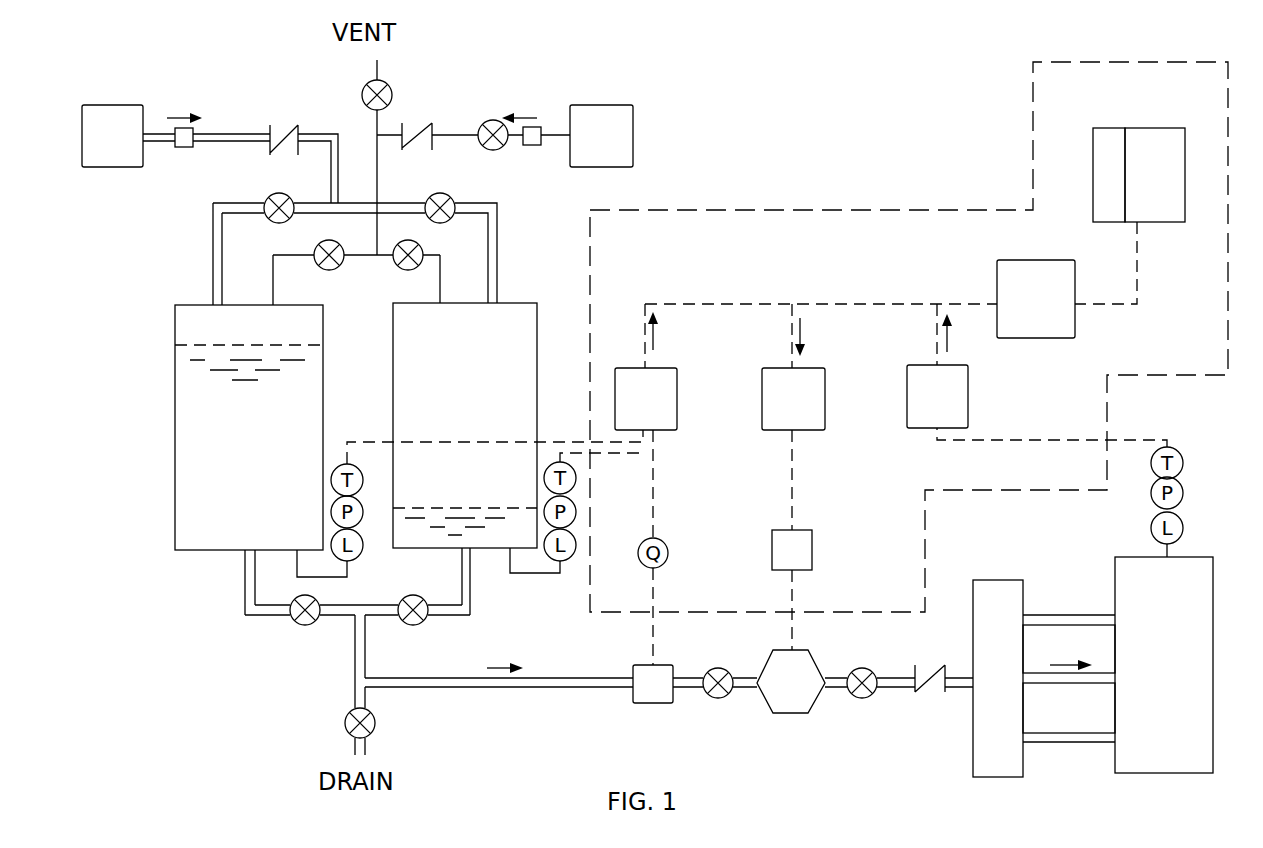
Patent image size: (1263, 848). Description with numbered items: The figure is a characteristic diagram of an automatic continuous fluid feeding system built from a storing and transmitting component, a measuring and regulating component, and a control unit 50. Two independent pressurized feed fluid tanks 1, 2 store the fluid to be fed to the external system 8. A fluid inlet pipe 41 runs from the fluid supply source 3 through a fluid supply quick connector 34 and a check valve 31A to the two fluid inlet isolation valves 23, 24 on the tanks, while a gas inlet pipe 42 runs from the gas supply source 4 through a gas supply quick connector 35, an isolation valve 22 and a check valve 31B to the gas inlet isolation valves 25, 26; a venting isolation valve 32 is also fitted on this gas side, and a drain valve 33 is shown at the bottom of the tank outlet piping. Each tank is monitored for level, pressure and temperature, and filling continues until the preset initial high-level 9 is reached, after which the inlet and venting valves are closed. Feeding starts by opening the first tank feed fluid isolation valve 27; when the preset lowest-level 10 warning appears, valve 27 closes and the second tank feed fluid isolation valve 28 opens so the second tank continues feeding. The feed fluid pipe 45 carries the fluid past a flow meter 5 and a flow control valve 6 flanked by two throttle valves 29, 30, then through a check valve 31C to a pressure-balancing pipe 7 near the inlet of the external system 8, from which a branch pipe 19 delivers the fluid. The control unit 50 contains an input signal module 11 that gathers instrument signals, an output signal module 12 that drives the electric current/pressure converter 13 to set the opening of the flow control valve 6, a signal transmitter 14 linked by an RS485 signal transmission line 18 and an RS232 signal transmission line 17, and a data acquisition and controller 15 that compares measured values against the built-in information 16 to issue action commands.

The first feed fluid tank 1 is at (255, 430).
The second feed fluid tank 2 is at (452, 430).
The fluid supply source 3 is at (104, 150).
The gas supply source 4 is at (593, 150).
The flow meter 5 is at (645, 698).
The flow control valve 6 is at (783, 696).
The pressure-balancing pipe 7 is at (989, 651).
The external system 8 is at (1154, 646).
The preset initial high-level 9 is at (228, 345).
The preset lowest-level 10 is at (438, 508).
The input signal module 11 is at (636, 413).
The output signal module 12 is at (781, 413).
The electric current/pressure converter 13 is at (781, 564).
The signal transmitter 14 is at (1024, 314).
The data acquisition and controller 15 is at (1141, 184).
The built-in information 16 is at (1098, 184).
The RS232 signal transmission line 17 is at (1136, 288).
The RS485 signal transmission line 18 is at (845, 302).
The branch pipe 19 is at (1055, 612).
The isolation valve 22 is at (497, 120).
The first fluid inlet isolation valve 23 is at (275, 195).
The second fluid inlet isolation valve 24 is at (452, 196).
The first gas inlet isolation valve 25 is at (314, 250).
The second gas inlet isolation valve 26 is at (420, 250).
The first tank feed fluid isolation valve 27 is at (292, 622).
The second tank feed fluid isolation valve 28 is at (430, 624).
The throttle valve 29 is at (715, 697).
The throttle valve 30 is at (872, 695).
The check valve 31A is at (291, 125).
The check valve 31B is at (420, 133).
The check valve 31C is at (945, 693).
The venting isolation valve 32 is at (388, 85).
The drain valve 33 is at (376, 722).
The fluid supply quick connector 34 is at (182, 148).
The gas supply quick connector 35 is at (538, 148).
The fluid inlet pipe 41 is at (230, 133).
The gas inlet pipe 42 is at (455, 135).
The feed fluid pipe 45 is at (557, 688).
The control unit 50 is at (820, 208).